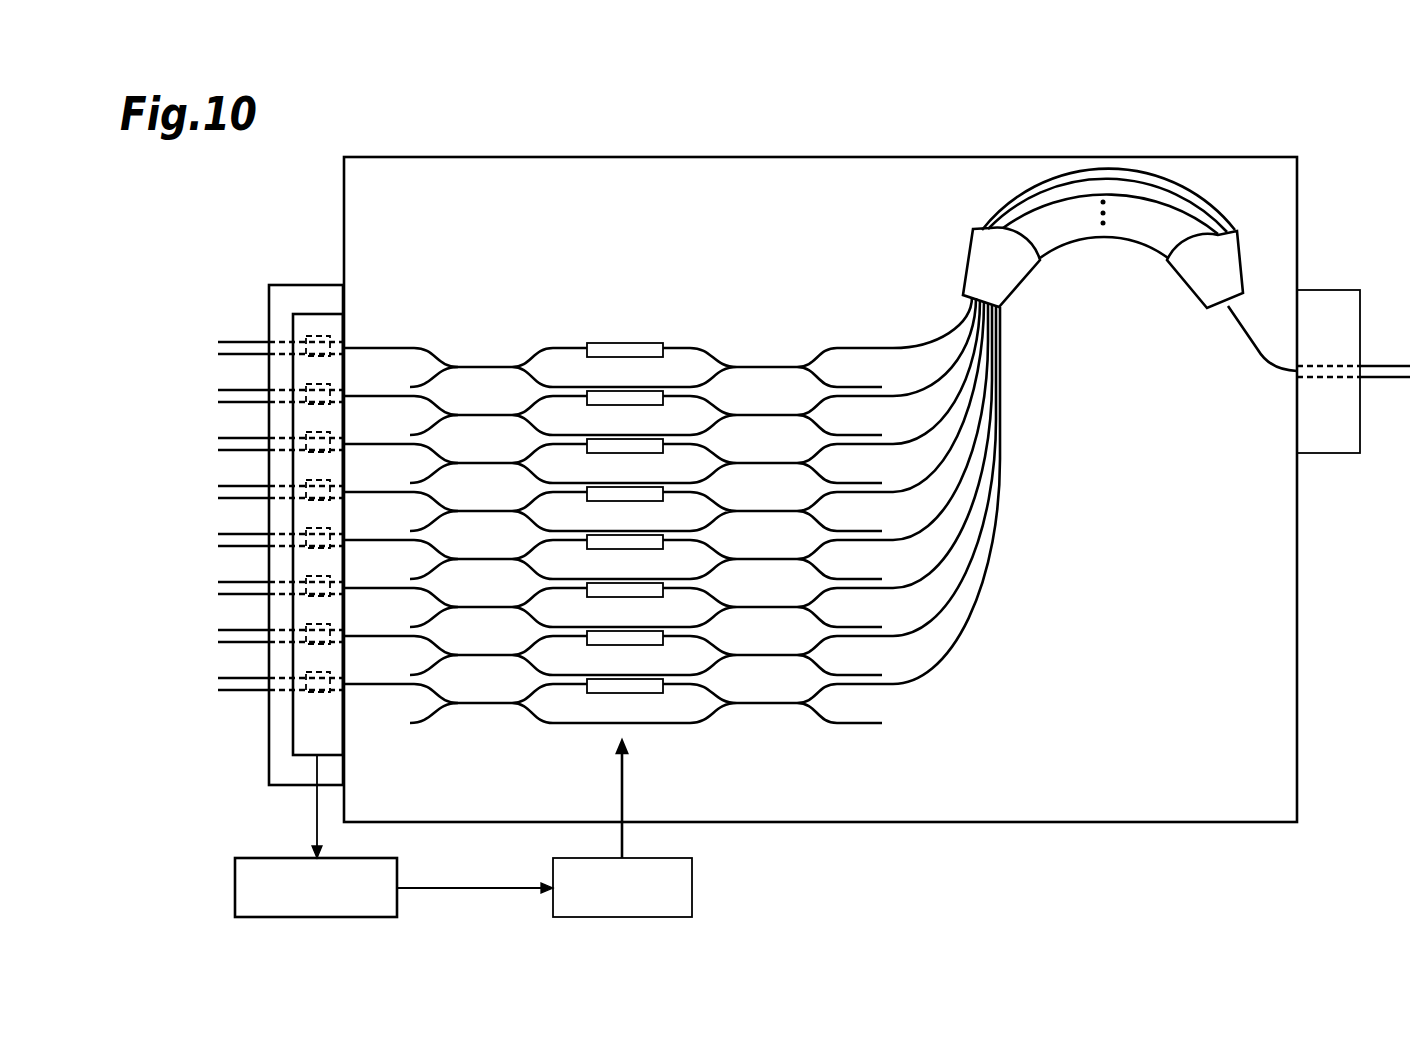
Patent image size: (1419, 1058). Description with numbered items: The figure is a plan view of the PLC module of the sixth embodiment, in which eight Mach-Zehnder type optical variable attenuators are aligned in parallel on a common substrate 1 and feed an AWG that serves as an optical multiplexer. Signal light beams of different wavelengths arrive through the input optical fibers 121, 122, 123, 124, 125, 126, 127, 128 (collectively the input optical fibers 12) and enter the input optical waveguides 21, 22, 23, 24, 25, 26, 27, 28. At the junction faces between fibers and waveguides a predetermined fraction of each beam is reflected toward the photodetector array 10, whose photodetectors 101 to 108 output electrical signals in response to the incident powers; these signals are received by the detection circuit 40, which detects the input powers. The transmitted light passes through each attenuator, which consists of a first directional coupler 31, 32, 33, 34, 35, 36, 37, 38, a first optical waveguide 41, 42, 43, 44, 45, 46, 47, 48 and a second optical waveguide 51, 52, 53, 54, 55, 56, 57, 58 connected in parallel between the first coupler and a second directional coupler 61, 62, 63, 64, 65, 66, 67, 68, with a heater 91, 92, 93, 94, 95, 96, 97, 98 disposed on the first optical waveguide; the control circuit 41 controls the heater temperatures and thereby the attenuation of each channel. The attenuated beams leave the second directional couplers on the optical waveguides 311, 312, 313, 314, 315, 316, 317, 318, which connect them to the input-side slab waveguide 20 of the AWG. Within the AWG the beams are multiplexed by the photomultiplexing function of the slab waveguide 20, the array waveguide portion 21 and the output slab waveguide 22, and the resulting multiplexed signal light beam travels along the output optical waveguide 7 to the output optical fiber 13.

The common substrate 1 is at (411, 157).
The photodetector array 10 is at (317, 312).
The photodetector 101 is at (308, 326).
The photodetector 108 is at (308, 704).
The input optical fibers 12 is at (284, 285).
The input optical fiber 121 is at (234, 342).
The input optical fiber 122 is at (234, 390).
The input optical fiber 123 is at (234, 438).
The input optical fiber 124 is at (234, 486).
The input optical fiber 125 is at (234, 534).
The input optical fiber 126 is at (234, 582).
The input optical fiber 127 is at (234, 630).
The input optical fiber 128 is at (234, 678).
The input optical waveguide 21 is at (386, 351).
The input optical waveguide 22 is at (386, 399).
The input optical waveguide 23 is at (386, 447).
The input optical waveguide 24 is at (386, 495).
The input optical waveguide 25 is at (386, 543).
The input optical waveguide 26 is at (386, 591).
The input optical waveguide 27 is at (386, 639).
The input optical waveguide 28 is at (386, 687).
The first directional coupler 31 is at (488, 365).
The first directional coupler 32 is at (488, 413).
The first directional coupler 33 is at (488, 461).
The first directional coupler 34 is at (488, 509).
The first directional coupler 35 is at (488, 557).
The first directional coupler 36 is at (488, 605).
The first directional coupler 37 is at (488, 653).
The first directional coupler 38 is at (488, 701).
The first optical waveguide 41 is at (586, 386).
The first optical waveguide 42 is at (586, 434).
The first optical waveguide 43 is at (586, 482).
The first optical waveguide 44 is at (586, 530).
The first optical waveguide 45 is at (586, 578).
The first optical waveguide 46 is at (586, 626).
The first optical waveguide 47 is at (586, 674).
The first optical waveguide 48 is at (586, 722).
The second optical waveguide 51 is at (704, 353).
The second optical waveguide 52 is at (704, 401).
The second optical waveguide 53 is at (704, 449).
The second optical waveguide 54 is at (704, 497).
The second optical waveguide 55 is at (704, 545).
The second optical waveguide 56 is at (704, 593).
The second optical waveguide 57 is at (704, 641).
The second optical waveguide 58 is at (704, 689).
The second directional coupler 61 is at (766, 366).
The second directional coupler 62 is at (766, 414).
The second directional coupler 63 is at (766, 462).
The second directional coupler 64 is at (766, 510).
The second directional coupler 65 is at (766, 558).
The second directional coupler 66 is at (766, 606).
The second directional coupler 67 is at (766, 654).
The second directional coupler 68 is at (766, 702).
The heater 91 is at (649, 358).
The heater 92 is at (649, 406).
The heater 93 is at (649, 454).
The heater 94 is at (649, 502).
The heater 95 is at (649, 550).
The heater 96 is at (649, 598).
The heater 97 is at (649, 646).
The heater 98 is at (649, 694).
The optical waveguide 311 is at (846, 352).
The optical waveguide 312 is at (846, 400).
The optical waveguide 313 is at (846, 448).
The optical waveguide 314 is at (846, 496).
The optical waveguide 315 is at (846, 544).
The optical waveguide 316 is at (846, 592).
The optical waveguide 317 is at (846, 640).
The optical waveguide 318 is at (846, 688).
The input-side slab waveguide 20 is at (1015, 308).
The output optical waveguide 7 is at (1248, 352).
The output optical fiber 13 is at (1400, 362).
The detection circuit 40 is at (235, 890).